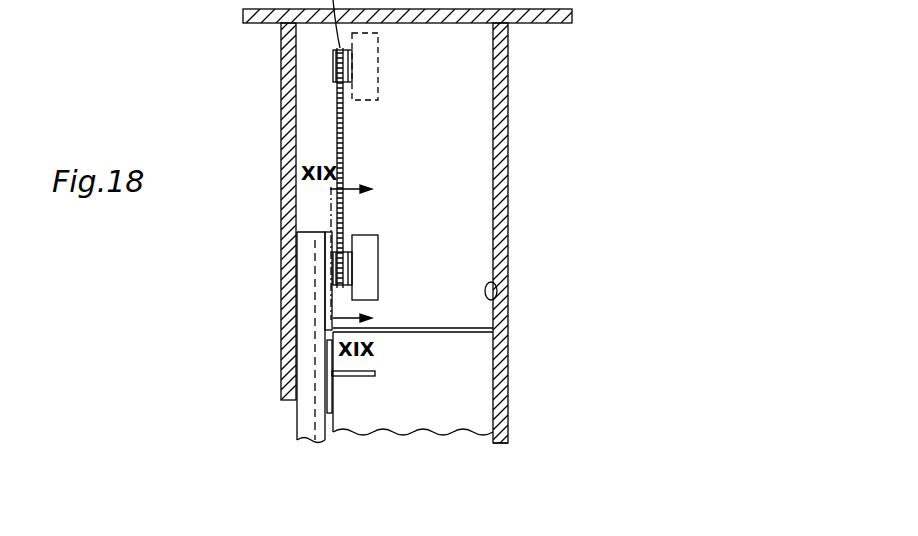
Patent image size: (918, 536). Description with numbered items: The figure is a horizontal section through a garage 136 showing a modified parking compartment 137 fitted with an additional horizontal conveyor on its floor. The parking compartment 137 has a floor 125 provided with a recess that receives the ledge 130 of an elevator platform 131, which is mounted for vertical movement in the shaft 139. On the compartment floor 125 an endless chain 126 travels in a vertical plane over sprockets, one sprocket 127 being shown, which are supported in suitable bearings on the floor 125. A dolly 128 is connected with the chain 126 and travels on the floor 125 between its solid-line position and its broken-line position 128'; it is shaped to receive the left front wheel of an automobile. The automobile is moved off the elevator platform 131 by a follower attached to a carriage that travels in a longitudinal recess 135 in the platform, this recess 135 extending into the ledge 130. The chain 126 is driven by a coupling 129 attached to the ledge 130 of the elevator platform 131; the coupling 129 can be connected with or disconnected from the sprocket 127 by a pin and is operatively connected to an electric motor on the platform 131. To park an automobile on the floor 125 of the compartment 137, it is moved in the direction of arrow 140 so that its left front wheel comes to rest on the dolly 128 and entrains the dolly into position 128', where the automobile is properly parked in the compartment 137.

The floor 125 is at (415, 229).
The endless chain 126 is at (343, 158).
The sprocket 127 is at (352, 289).
The dolly 128 is at (395, 261).
The broken-line position of the dolly 128' is at (398, 66).
The coupling 129 is at (328, 266).
The ledge 130 is at (307, 318).
The elevator platform 131 is at (473, 370).
The longitudinal recess 135 is at (318, 428).
The garage 136 is at (516, 236).
The parking compartment 137 is at (493, 300).
The shaft 139 is at (495, 443).
The arrow 140 is at (405, 448).